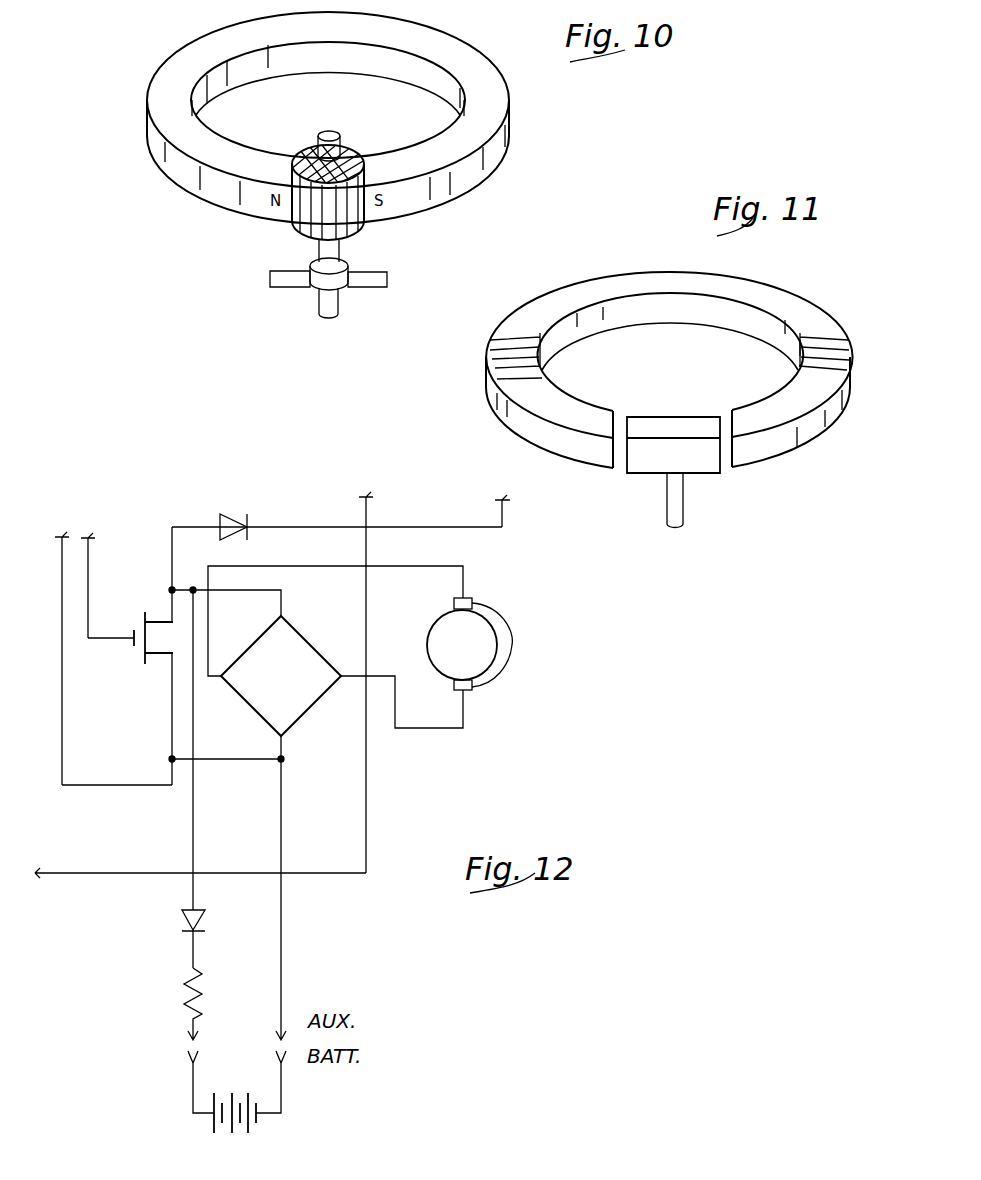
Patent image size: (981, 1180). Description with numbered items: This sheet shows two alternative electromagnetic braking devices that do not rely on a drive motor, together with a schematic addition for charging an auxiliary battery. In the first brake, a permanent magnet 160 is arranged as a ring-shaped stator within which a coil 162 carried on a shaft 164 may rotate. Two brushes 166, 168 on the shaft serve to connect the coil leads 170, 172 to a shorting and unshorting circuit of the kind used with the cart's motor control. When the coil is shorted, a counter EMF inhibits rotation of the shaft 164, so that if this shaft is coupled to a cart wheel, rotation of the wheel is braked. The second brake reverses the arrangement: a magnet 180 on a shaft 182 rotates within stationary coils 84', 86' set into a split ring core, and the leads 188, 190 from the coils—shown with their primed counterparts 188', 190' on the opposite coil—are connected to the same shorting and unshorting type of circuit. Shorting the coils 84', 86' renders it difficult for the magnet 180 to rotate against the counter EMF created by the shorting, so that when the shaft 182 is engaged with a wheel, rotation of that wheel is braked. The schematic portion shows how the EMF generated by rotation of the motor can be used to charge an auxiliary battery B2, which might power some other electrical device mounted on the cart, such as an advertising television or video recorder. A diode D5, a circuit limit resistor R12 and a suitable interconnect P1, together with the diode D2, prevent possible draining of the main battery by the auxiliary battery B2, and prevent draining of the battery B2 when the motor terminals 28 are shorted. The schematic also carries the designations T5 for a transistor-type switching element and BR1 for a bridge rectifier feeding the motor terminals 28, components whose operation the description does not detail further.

In FIG. 10, the permanent magnet 160 is at (497, 163).
In FIG. 10, the coil 162 is at (294, 210).
In FIG. 10, the shaft 164 is at (348, 247).
In FIG. 10, the brush 166 is at (312, 287).
In FIG. 10, the brush 168 is at (350, 290).
In FIG. 10, the coil lead 170 is at (270, 280).
In FIG. 10, the coil lead 172 is at (388, 280).
In FIG. 11, the lead 188 is at (561, 357).
In FIG. 11, the ring core section 188' is at (763, 362).
In FIG. 11, the coil 84' is at (488, 356).
In FIG. 11, the coil 86' is at (846, 360).
In FIG. 11, the lead 190 is at (519, 425).
In FIG. 11, the ring end 190' is at (812, 448).
In FIG. 11, the magnet 180 is at (690, 465).
In FIG. 11, the shaft 182 is at (666, 502).
In FIG. 12, the motor terminals 28 is at (510, 623).
In FIG. 12, the transistor T5 is at (147, 655).
In FIG. 12, the interconnect diode D2 is at (259, 516).
In FIG. 12, the bridge rectifier BR1 is at (282, 670).
In FIG. 12, the diode D5 is at (215, 939).
In FIG. 12, the circuit limit resistor R12 is at (219, 1004).
In FIG. 12, the interconnect P1 is at (187, 1045).
In FIG. 12, the auxiliary battery B2 is at (266, 1117).